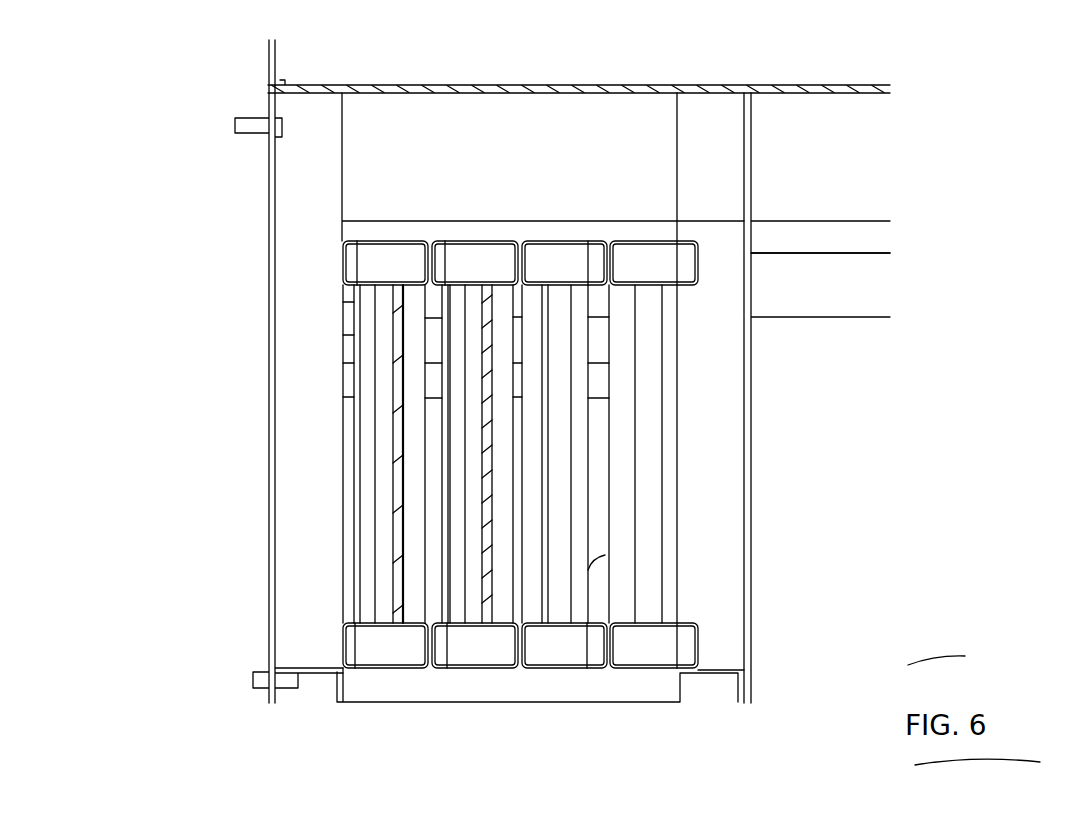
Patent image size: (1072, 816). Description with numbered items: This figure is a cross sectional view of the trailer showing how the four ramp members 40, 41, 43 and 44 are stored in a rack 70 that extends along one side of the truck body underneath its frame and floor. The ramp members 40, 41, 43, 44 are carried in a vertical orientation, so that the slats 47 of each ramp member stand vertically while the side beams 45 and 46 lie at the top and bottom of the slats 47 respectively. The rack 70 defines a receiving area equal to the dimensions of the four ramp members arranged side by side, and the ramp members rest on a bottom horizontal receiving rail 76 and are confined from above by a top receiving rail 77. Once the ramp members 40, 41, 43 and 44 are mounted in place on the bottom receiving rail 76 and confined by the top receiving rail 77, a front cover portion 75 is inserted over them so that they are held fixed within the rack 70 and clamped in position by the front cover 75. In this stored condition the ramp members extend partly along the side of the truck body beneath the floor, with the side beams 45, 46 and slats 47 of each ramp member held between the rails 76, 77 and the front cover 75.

The ramp member 40 is at (393, 255).
The ramp member 41 is at (477, 252).
The ramp member 43 is at (549, 255).
The ramp member 44 is at (635, 253).
The side beam 45 is at (702, 248).
The side beam 46 is at (690, 617).
The slats 47 is at (637, 370).
The rack 70 is at (764, 397).
The front cover portion 75 is at (273, 352).
The bottom horizontal receiving rail 76 is at (402, 693).
The top receiving rail 77 is at (374, 218).